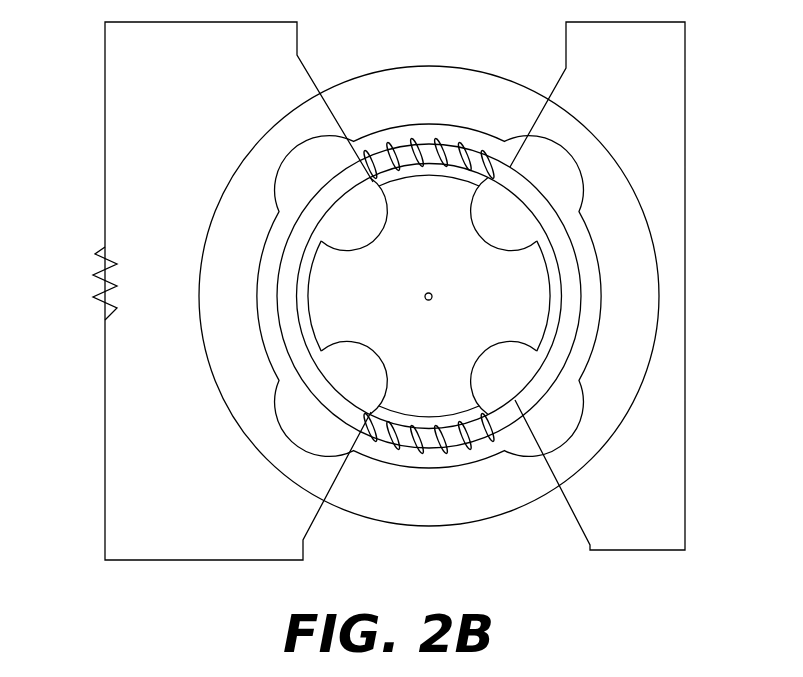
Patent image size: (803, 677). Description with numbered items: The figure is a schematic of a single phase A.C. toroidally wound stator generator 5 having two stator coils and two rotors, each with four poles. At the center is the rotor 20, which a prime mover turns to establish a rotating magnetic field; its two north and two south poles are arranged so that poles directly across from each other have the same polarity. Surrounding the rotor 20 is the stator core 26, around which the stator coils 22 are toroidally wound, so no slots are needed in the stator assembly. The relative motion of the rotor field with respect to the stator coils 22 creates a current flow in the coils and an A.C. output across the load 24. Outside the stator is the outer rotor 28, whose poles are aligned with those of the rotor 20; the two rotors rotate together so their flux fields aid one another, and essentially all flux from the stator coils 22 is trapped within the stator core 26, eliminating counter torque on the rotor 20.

The generator 5 is at (124, 111).
The rotor 20 is at (476, 278).
The stator coils 22 is at (452, 130).
The load 24 is at (74, 273).
The stator core 26 is at (568, 264).
The outer rotor 28 is at (630, 337).